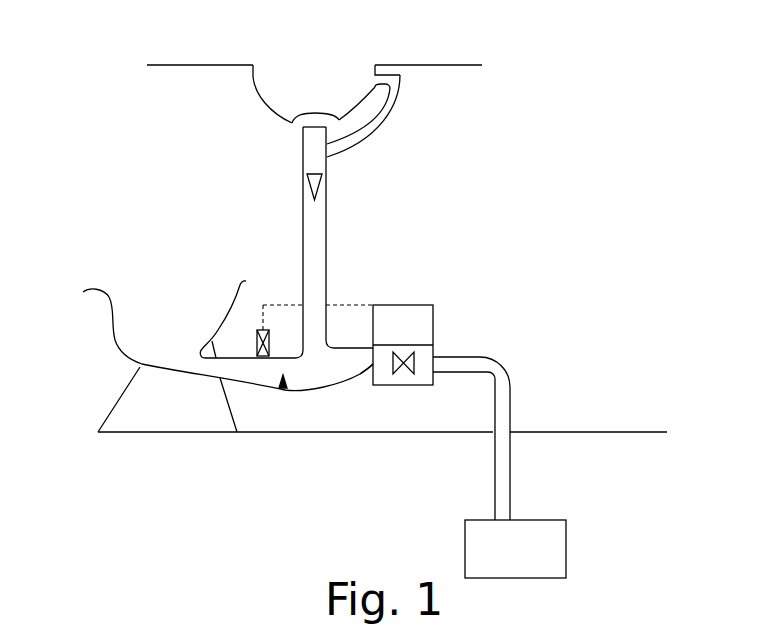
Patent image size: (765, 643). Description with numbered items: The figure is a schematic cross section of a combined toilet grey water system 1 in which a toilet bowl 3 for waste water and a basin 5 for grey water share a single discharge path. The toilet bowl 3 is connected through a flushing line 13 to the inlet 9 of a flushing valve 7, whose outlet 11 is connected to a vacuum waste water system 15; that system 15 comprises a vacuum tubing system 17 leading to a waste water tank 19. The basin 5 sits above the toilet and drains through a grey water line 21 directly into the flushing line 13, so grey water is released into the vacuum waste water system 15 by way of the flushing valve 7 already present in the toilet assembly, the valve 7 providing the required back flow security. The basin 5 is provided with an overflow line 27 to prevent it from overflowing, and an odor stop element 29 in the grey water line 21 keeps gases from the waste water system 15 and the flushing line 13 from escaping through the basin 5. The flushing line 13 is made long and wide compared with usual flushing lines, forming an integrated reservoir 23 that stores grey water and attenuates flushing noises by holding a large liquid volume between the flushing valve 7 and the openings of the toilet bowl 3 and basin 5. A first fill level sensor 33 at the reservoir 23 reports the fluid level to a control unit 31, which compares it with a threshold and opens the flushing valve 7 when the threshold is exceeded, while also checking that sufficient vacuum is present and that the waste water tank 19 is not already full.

The combined toilet grey water system 1 is at (575, 58).
The toilet bowl 3 is at (112, 327).
The basin 5 is at (253, 83).
The flushing valve 7 is at (400, 387).
The inlet 9 is at (369, 372).
The outlet 11 is at (457, 355).
The flushing line 13 is at (255, 390).
The vacuum waste water system 15 is at (598, 507).
The vacuum tubing system 17 is at (512, 464).
The waste water tank 19 is at (567, 548).
The grey water line 21 is at (327, 240).
The reservoir 23 is at (283, 388).
The overflow line 27 is at (402, 95).
The odor stop element 29 is at (325, 185).
The control unit 31 is at (435, 315).
The first fill level sensor 33 is at (250, 333).